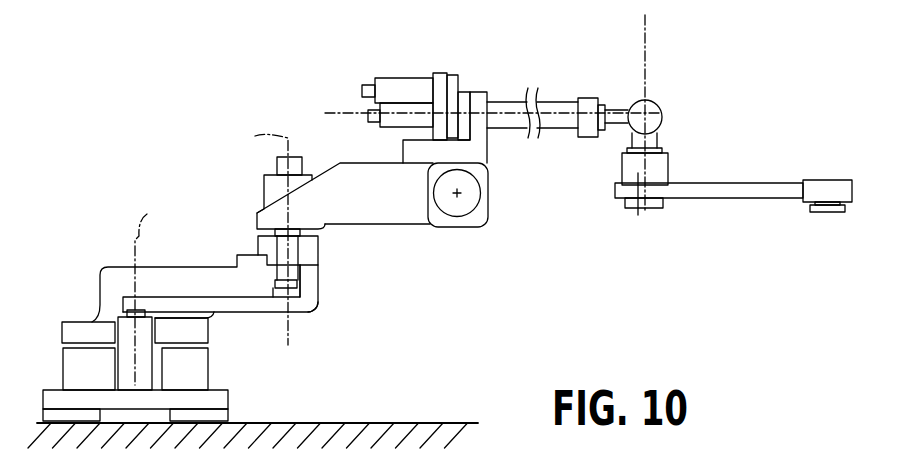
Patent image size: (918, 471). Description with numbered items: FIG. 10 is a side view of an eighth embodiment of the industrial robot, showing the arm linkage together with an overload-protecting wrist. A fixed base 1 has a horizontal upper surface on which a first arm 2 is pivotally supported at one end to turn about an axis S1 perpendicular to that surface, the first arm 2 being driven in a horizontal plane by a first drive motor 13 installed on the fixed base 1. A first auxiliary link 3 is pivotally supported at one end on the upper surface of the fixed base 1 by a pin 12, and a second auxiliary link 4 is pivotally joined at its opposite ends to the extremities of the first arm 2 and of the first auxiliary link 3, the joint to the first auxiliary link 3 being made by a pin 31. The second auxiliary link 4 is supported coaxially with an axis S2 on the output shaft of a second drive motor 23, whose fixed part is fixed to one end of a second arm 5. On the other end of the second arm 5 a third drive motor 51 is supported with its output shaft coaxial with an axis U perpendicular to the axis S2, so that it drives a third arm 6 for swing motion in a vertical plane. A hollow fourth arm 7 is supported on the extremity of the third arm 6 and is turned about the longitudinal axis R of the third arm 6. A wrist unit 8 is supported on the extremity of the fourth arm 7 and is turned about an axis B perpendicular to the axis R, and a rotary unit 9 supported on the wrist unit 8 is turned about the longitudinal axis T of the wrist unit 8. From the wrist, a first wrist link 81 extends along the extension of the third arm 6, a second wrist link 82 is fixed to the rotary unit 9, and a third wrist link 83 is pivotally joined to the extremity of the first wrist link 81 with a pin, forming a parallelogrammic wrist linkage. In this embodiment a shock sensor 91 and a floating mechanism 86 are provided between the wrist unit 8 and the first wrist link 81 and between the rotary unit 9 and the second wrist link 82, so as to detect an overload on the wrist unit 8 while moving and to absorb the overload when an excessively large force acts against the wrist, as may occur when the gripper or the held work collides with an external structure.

The fixed base 1 is at (218, 390).
The first arm 2 is at (223, 264).
The first auxiliary link 3 is at (253, 314).
The second auxiliary link 4 is at (318, 250).
The second arm 5 is at (402, 207).
The third arm 6 is at (497, 104).
The fourth arm 7 is at (613, 110).
The wrist unit 8 is at (662, 105).
The rotary unit 9 is at (660, 142).
The pin 12 is at (122, 314).
The first drive motor 13 is at (78, 370).
The second drive motor 23 is at (275, 188).
The pin 31 is at (300, 286).
The third drive motor 51 is at (463, 205).
The first wrist link 81 is at (727, 185).
The second wrist link 82 is at (664, 205).
The third wrist link 83 is at (835, 212).
The floating mechanism 86 is at (638, 215).
The shock sensor 91 is at (625, 162).
The longitudinal axis of third arm R is at (347, 110).
The first arm axis S1 is at (146, 289).
The second auxiliary link axis S2 is at (258, 235).
The longitudinal axis of wrist unit T is at (645, 22).
The wrist axis B is at (648, 114).
The third arm swing axis U is at (461, 193).